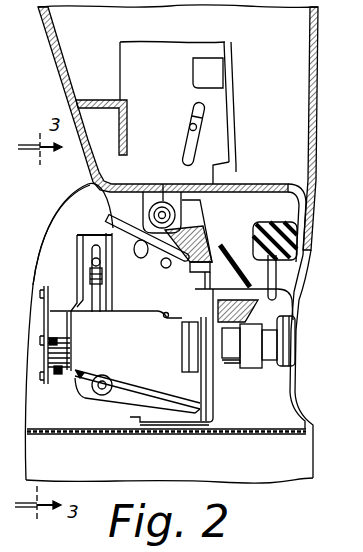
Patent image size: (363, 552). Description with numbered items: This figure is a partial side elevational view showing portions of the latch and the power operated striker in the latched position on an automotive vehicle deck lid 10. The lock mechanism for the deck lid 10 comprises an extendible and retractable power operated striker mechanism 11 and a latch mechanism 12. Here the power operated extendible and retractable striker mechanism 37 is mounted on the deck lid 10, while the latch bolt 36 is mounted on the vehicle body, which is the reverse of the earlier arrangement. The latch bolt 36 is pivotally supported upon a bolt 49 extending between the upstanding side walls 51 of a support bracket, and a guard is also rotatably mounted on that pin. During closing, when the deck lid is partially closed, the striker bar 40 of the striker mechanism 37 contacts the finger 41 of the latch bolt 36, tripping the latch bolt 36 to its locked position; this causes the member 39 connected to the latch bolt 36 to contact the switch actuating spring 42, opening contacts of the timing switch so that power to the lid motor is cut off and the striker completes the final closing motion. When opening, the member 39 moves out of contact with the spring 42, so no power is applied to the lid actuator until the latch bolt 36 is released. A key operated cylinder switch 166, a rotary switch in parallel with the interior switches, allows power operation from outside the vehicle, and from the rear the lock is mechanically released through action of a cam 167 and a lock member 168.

The deck lid 10 is at (322, 62).
The power operated striker mechanism 11 is at (208, 170).
The latch mechanism 12 is at (77, 276).
The latch bolt 36 is at (197, 223).
The power operated extendible and retractable striker mechanism 37 is at (132, 68).
The member 39 is at (108, 228).
The striker bar 40 is at (164, 200).
The finger 41 is at (86, 190).
The switch actuating spring 42 is at (96, 306).
The bolt 49 is at (161, 265).
The upstanding side walls 51 is at (147, 298).
The key operated cylinder switch 166 is at (58, 378).
The cam 167 is at (181, 357).
The lock member 168 is at (203, 313).